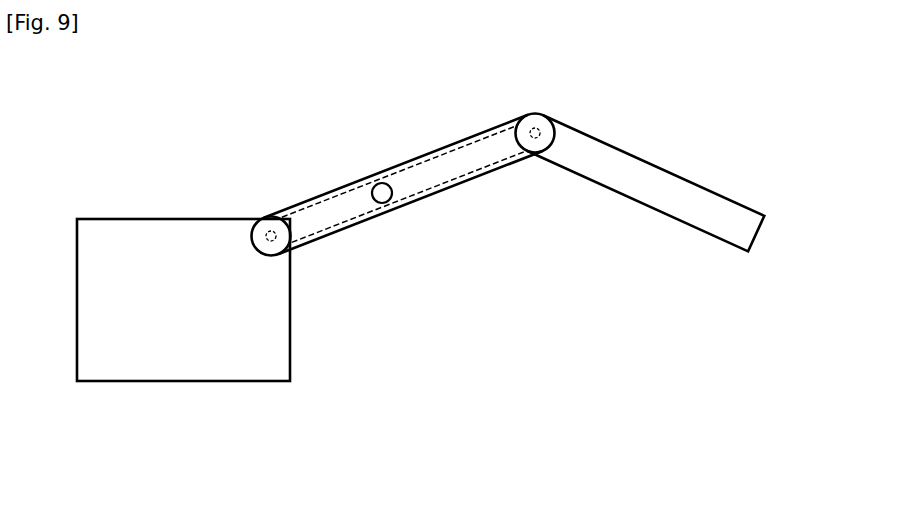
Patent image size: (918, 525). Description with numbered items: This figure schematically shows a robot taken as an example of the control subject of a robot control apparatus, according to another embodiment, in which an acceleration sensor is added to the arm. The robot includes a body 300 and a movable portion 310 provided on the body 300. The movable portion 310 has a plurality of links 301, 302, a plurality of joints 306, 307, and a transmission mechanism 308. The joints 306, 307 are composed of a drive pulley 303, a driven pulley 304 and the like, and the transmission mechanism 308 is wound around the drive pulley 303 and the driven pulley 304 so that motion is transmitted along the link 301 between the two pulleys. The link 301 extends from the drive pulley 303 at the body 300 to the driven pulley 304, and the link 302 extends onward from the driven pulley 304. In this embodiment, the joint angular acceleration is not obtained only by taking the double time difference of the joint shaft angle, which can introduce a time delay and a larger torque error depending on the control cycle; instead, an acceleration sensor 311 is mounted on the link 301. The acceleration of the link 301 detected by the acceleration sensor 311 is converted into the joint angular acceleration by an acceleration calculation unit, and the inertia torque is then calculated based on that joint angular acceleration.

The body 300 is at (167, 219).
The link 301 is at (440, 149).
The link 302 is at (681, 178).
The drive pulley 303 is at (265, 251).
The driven pulley 304 is at (535, 153).
The joint 306 is at (278, 256).
The joint 307 is at (542, 136).
The transmission mechanism 308 is at (437, 190).
The movable portion 310 is at (487, 220).
The acceleration sensor 311 is at (369, 183).